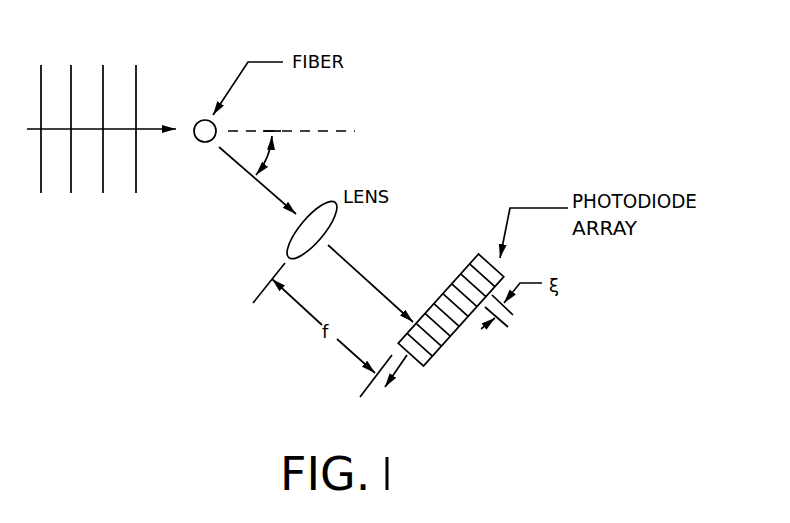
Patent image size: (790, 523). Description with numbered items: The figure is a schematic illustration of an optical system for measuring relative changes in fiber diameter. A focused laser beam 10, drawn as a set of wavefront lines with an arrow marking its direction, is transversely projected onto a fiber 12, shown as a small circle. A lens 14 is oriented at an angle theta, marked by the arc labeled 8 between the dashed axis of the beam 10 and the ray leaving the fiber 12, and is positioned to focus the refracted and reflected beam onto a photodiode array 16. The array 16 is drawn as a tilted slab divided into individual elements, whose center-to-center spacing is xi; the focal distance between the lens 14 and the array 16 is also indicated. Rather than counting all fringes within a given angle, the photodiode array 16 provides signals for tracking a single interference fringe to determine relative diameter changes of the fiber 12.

The angle theta between fiber axis and ray to lens 8 is at (270, 156).
The focused laser beam 10 is at (117, 72).
The fiber 12 is at (202, 143).
The lens 14 is at (288, 238).
The photodiode array 16 is at (440, 350).